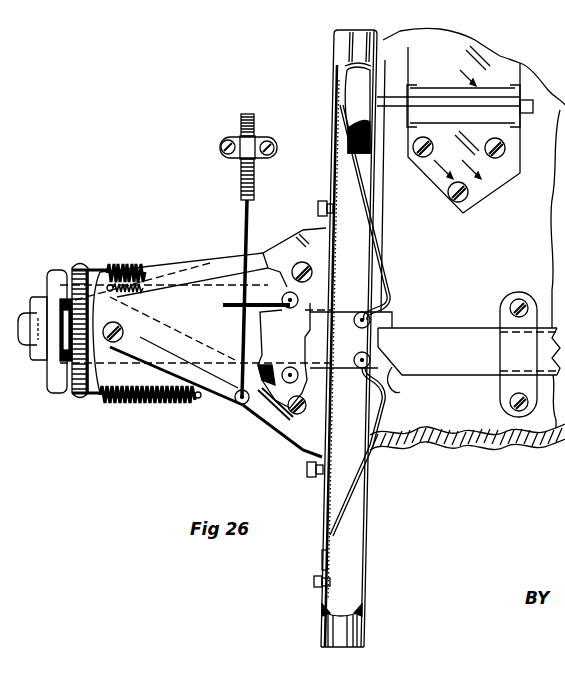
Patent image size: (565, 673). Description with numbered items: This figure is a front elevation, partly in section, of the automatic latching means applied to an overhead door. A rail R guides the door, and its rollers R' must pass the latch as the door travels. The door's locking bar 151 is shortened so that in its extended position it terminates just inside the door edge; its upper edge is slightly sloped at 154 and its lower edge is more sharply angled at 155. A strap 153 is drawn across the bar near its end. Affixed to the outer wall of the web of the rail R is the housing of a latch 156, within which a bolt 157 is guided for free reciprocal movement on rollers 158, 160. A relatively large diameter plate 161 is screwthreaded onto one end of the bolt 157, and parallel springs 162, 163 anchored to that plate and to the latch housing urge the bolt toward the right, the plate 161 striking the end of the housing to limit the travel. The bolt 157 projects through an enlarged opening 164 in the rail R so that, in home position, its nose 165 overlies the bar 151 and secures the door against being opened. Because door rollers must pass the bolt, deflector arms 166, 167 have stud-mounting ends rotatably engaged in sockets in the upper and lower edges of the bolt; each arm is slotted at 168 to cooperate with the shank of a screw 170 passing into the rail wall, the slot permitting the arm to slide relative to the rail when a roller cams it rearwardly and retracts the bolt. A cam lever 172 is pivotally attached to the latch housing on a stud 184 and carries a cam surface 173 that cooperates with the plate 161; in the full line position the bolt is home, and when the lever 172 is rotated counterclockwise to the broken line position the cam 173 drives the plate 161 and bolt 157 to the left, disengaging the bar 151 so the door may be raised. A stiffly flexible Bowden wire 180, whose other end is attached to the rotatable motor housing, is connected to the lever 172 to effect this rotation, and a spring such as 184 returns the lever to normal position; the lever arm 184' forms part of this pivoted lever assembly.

The locking bar 151 is at (463, 327).
The strap plate 153 is at (518, 364).
The sloped upper edge 154 is at (403, 328).
The angled lower edge 155 is at (393, 378).
The latch 156 is at (268, 446).
The bolt 157 is at (274, 324).
The roller 158 is at (322, 288).
The roller 160 is at (296, 378).
The plate 161 is at (62, 398).
The spring 162 is at (133, 263).
The spring 163 is at (117, 400).
The opening 164 is at (334, 311).
The nose 165 is at (387, 313).
The deflector arm 166 is at (373, 226).
The deflector arm 167 is at (350, 492).
The slot 168 is at (328, 567).
The screw 170 is at (332, 583).
The cam lever 172 is at (210, 383).
The cam surface 173 is at (98, 270).
The flexible wire 180 is at (251, 232).
The stud 184 is at (78, 365).
The lever 184' is at (196, 317).
The rail R is at (338, 338).
The rod end R' is at (455, 120).